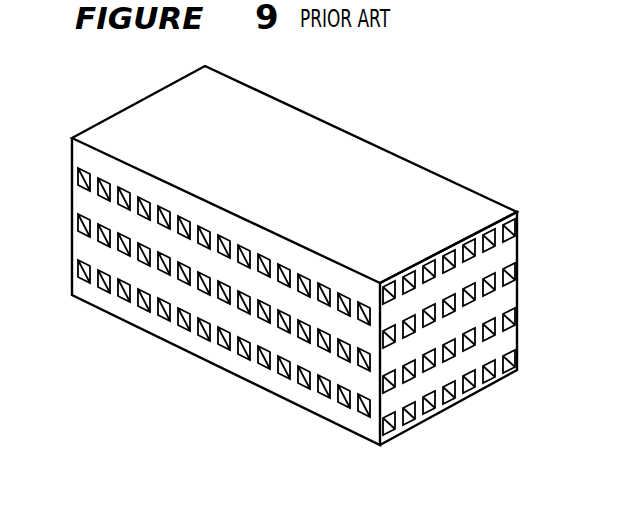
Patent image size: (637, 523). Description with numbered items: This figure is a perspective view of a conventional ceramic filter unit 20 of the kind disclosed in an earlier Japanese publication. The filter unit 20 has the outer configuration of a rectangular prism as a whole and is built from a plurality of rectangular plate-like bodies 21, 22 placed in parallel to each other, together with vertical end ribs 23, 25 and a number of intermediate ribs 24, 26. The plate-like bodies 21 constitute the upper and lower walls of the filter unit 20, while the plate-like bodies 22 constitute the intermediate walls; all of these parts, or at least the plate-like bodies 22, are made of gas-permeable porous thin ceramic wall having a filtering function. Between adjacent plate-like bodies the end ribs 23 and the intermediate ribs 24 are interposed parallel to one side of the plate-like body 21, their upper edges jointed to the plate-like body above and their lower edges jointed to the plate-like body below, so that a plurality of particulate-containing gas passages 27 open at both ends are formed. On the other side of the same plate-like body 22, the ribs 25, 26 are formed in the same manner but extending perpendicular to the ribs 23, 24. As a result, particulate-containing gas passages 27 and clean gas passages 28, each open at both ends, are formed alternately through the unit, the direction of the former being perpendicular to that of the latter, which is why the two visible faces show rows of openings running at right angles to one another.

The filter unit 20 is at (393, 152).
The plate-like body 21 is at (477, 233).
The plate-like body 22 is at (513, 231).
The end rib 23 is at (518, 316).
The intermediate rib 24 is at (502, 330).
The end rib 25 is at (77, 267).
The intermediate rib 26 is at (93, 282).
The particulate-containing gas passage 27 is at (447, 257).
The clean gas passage 28 is at (190, 222).